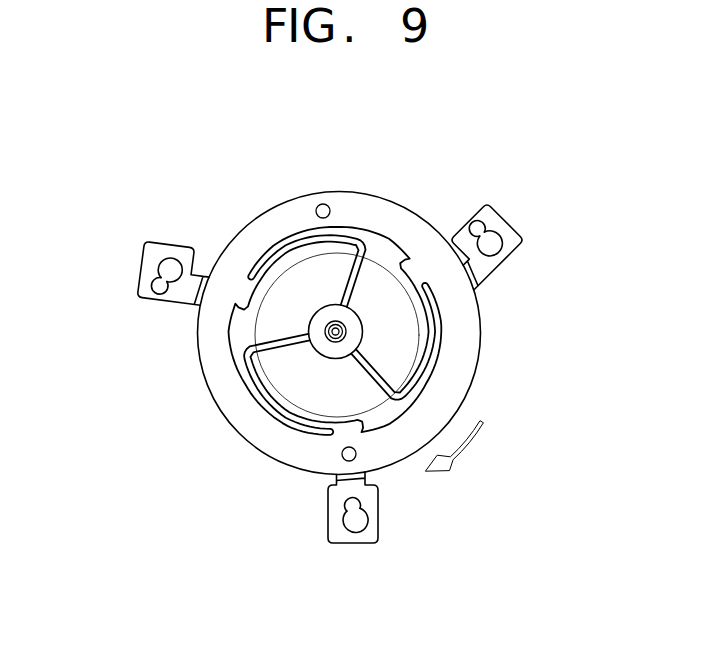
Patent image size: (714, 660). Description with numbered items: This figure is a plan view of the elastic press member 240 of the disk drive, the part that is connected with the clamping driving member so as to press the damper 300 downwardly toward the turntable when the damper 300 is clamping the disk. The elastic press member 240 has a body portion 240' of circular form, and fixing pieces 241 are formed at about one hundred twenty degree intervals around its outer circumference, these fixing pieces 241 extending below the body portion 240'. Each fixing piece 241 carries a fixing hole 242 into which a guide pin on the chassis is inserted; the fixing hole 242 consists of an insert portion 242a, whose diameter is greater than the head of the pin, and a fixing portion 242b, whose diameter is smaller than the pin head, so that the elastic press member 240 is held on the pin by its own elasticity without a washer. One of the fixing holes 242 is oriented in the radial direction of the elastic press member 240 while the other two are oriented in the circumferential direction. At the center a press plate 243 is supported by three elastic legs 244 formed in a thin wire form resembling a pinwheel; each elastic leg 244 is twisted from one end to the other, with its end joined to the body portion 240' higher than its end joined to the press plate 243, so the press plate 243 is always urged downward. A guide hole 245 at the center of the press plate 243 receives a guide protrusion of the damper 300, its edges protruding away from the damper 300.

The elastic press member 240 is at (323, 375).
The body portion 240' is at (401, 333).
The fixing piece 241 is at (323, 375).
The fixing hole 242 is at (340, 400).
The insert portion 242a is at (332, 379).
The fixing portion 242b is at (505, 245).
The press plate 243 is at (320, 349).
The elastic leg 244 is at (344, 282).
The guide hole 245 is at (333, 323).
The damper 300 is at (380, 300).